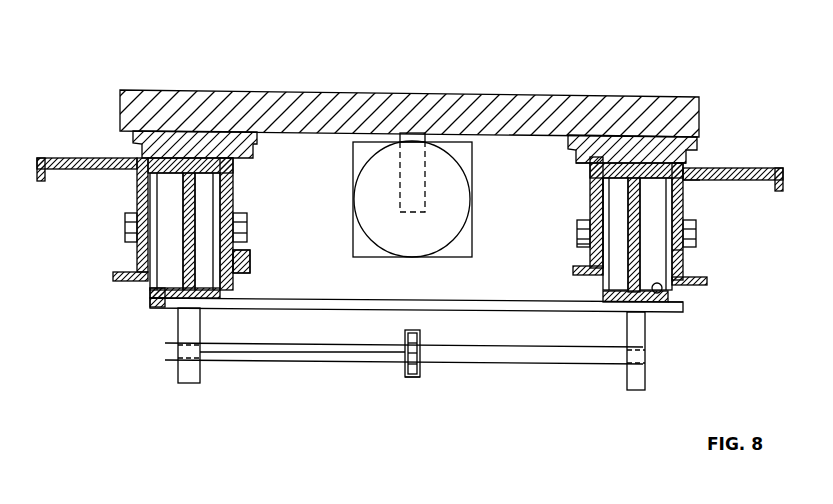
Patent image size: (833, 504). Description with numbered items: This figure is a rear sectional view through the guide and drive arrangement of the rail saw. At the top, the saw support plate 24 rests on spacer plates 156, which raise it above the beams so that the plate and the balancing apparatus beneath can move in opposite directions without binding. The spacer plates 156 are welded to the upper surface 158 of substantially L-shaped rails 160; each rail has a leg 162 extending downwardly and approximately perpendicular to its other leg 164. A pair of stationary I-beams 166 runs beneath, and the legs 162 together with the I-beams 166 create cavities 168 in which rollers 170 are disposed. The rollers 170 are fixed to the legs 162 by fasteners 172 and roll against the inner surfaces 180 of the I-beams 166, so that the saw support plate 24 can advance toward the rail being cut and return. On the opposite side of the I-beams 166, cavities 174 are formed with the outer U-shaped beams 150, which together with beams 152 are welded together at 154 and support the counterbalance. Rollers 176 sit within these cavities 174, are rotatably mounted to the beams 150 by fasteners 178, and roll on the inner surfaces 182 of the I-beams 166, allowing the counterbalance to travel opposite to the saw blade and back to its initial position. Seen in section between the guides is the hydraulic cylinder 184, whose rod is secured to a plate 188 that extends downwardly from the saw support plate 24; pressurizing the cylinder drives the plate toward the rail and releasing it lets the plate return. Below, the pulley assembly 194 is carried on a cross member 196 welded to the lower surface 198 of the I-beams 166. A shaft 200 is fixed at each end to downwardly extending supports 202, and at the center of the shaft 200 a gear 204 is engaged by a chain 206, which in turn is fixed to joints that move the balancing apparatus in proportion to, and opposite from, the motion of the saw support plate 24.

The saw support plate 24 is at (433, 104).
The U-shaped beam 150 is at (673, 258).
The U-shaped beam 152 is at (758, 177).
The weld 154 is at (684, 196).
The spacer plate 156 is at (253, 136).
The upper surface 158 is at (580, 157).
The L-shaped rail 160 is at (603, 207).
The leg 162 is at (577, 222).
The leg 164 is at (668, 155).
The I-beam 166 is at (677, 165).
The cavity 168 is at (227, 280).
The roller 170 is at (210, 252).
The fastener 172 is at (577, 240).
The cavity 174 is at (150, 202).
The roller 176 is at (165, 273).
The fastener 178 is at (697, 233).
The inner surface 180 is at (603, 183).
The inner surface 182 is at (667, 295).
The hydraulic cylinder 184 is at (352, 207).
The plate 188 is at (400, 172).
The pulley assembly 194 is at (395, 385).
The cross member 196 is at (416, 331).
The lower surface 198 is at (158, 300).
The shaft 200 is at (542, 358).
The support 202 is at (185, 383).
The gear 204 is at (420, 362).
The chain 206 is at (412, 375).